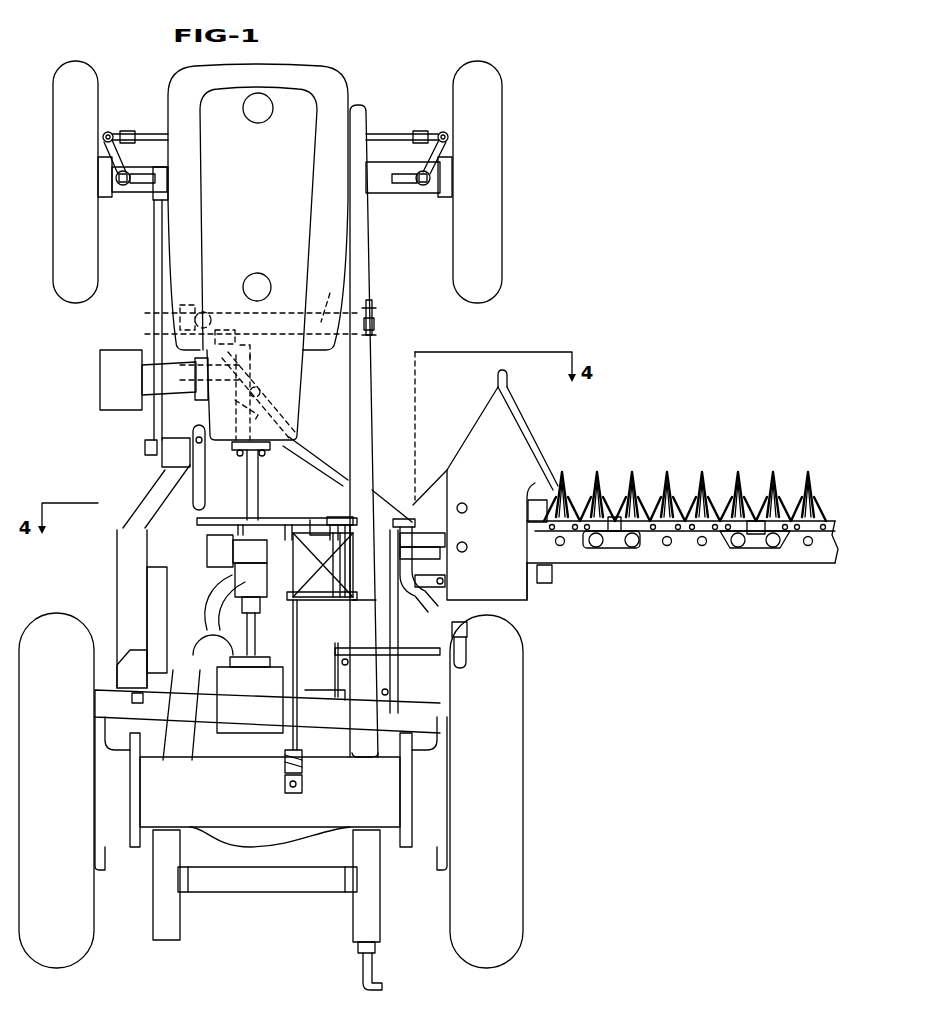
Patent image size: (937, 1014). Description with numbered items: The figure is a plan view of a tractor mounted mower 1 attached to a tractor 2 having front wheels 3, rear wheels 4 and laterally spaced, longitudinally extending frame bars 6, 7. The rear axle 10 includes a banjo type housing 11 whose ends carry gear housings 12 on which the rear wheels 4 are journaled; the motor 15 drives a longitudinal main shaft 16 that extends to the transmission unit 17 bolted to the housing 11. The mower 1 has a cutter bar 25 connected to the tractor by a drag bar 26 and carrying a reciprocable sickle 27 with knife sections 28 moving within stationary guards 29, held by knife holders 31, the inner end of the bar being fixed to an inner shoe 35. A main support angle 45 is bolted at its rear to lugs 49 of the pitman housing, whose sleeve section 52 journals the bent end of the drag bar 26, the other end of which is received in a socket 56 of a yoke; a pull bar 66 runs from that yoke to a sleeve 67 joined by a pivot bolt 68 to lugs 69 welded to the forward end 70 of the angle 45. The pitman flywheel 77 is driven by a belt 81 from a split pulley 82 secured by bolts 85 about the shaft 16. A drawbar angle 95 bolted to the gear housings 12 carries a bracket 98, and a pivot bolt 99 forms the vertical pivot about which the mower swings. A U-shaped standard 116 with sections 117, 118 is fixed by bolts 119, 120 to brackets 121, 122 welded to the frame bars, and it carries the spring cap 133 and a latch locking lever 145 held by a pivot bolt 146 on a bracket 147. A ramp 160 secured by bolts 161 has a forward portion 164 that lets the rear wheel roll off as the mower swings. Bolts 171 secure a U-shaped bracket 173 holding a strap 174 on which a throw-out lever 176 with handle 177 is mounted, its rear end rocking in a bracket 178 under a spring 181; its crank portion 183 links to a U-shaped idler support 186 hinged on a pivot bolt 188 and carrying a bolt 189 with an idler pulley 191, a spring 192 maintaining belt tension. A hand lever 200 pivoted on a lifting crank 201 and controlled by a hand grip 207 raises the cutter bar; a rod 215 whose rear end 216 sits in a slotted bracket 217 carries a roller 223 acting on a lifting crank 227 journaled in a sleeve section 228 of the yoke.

The mower 1 is at (531, 608).
The tractor 2 is at (374, 74).
The front wheels 3 is at (88, 87).
The rear wheels 4 is at (72, 950).
The frame bar 6 is at (180, 492).
The frame bar 7 is at (372, 312).
The rear axle 10 is at (280, 846).
The housing 11 is at (222, 816).
The gear housings 12 is at (103, 787).
The motor 15 is at (322, 237).
The main shaft 16 is at (256, 472).
The transmission unit 17 is at (272, 667).
The cutter bar 25 is at (730, 568).
The drag bar 26 is at (302, 571).
The sickle 27 is at (688, 548).
The knife sections 28 is at (738, 500).
The guards 29 is at (667, 486).
The knife holders 31 is at (610, 549).
The inner shoe 35 is at (547, 583).
The main support angle 45 is at (115, 527).
The lugs 49 is at (145, 578).
The sleeve section 52 is at (255, 670).
The socket 56 is at (438, 570).
The pull bar 66 is at (312, 449).
The sleeve 67 is at (255, 422).
The pivot bolt 68 is at (260, 408).
The lugs 69 is at (258, 389).
The forward end 70 is at (183, 378).
The pitman flywheel 77 is at (155, 469).
The belt 81 is at (264, 541).
The split pulley 82 is at (196, 592).
The bolts 85 is at (256, 636).
The drawbar angle 95 is at (314, 690).
The bracket 98 is at (137, 663).
The pivot bolt 99 is at (215, 646).
The standard 116 is at (317, 297).
The section 117 is at (235, 312).
The bolting section 118 is at (376, 335).
The bolt 119 is at (235, 331).
The bolt 120 is at (374, 325).
The bracket 121 is at (185, 293).
The bracket 122 is at (372, 307).
The cap 133 is at (190, 330).
The latch locking lever 145 is at (247, 346).
The pivot bolt 146 is at (246, 362).
The bracket 147 is at (235, 330).
The ramp 160 is at (494, 479).
The bolts 161 is at (470, 510).
The forward portion 164 is at (512, 426).
The bolts 171 is at (372, 600).
The bracket 173 is at (333, 522).
The supporting strap 174 is at (298, 613).
The throw-out lever 176 is at (334, 656).
The handle section 177 is at (303, 790).
The bracket 178 is at (283, 787).
The spring 181 is at (283, 762).
The crank portion 183 is at (256, 621).
The idler support 186 is at (290, 518).
The pivot bolt 188 is at (316, 518).
The bolt 189 is at (228, 532).
The idler pulley 191 is at (242, 520).
The spring 192 is at (357, 550).
The hand lever 200 is at (468, 656).
The lifting lever crank 201 is at (433, 650).
The hand grip 207 is at (467, 636).
The rod 215 is at (430, 606).
The rear end 216 is at (382, 973).
The slotted bracket 217 is at (375, 949).
The roller 223 is at (378, 508).
The lifting crank 227 is at (422, 547).
The sleeve section 228 is at (445, 584).